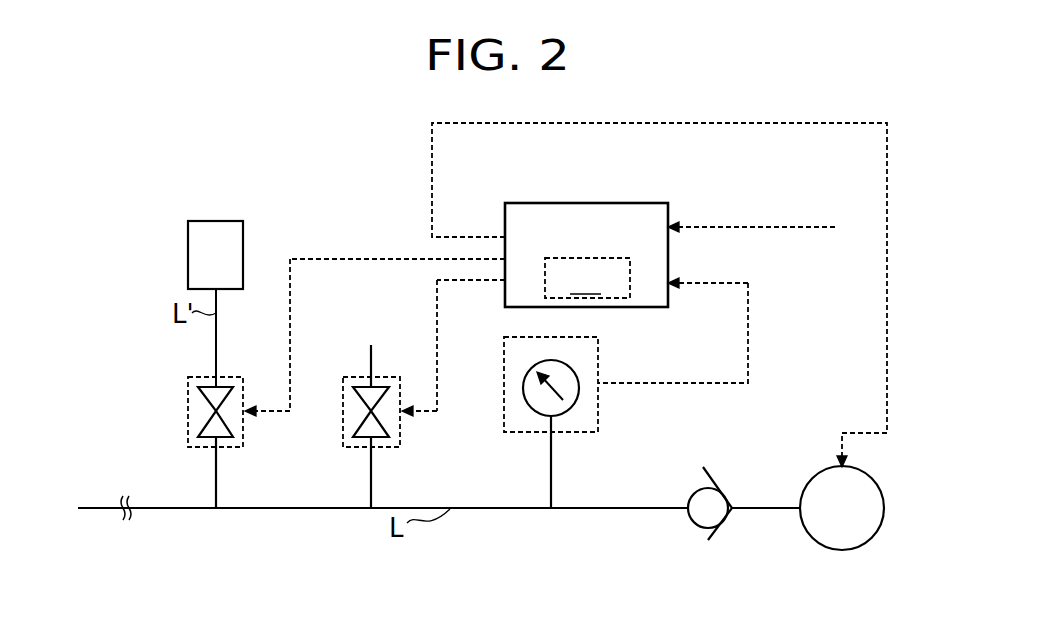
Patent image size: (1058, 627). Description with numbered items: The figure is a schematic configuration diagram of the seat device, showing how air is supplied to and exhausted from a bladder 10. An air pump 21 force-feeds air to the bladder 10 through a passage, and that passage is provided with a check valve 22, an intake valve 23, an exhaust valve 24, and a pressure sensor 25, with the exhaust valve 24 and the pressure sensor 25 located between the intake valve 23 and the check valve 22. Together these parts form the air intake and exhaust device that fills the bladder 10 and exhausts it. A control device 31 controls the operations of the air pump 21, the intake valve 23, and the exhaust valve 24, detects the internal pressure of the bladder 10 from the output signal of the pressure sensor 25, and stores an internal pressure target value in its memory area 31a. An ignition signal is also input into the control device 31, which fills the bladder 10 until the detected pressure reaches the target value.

The bladder 10 is at (188, 221).
The air pump 21 is at (807, 486).
The check valve 22 is at (691, 494).
The intake valve 23 is at (216, 411).
The exhaust valve 24 is at (371, 411).
The pressure sensor 25 is at (578, 372).
The control device 31 is at (668, 203).
The memory area 31a is at (630, 298).